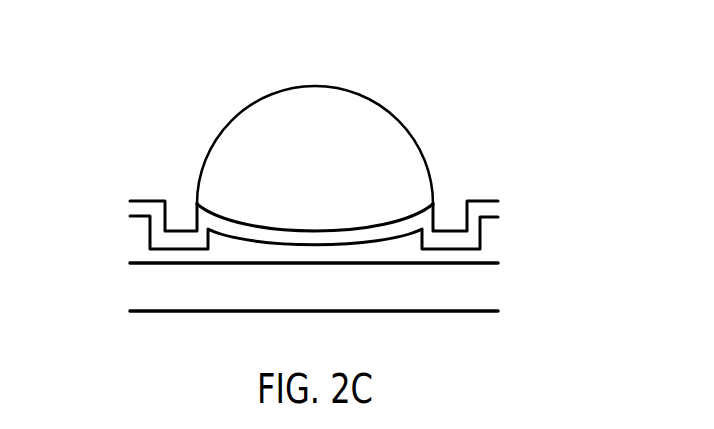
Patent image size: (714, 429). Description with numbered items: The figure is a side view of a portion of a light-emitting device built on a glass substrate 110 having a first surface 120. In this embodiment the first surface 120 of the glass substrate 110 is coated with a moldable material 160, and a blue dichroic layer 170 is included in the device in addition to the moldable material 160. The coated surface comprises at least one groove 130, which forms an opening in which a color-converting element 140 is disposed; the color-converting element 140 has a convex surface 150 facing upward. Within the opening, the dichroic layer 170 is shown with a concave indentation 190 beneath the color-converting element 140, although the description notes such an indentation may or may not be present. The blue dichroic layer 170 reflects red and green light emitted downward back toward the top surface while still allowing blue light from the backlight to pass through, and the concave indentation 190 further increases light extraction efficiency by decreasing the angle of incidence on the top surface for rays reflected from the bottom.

The glass substrate 110 is at (480, 290).
The first surface 120 is at (147, 266).
The groove 130 is at (176, 192).
The color-converting element 140 is at (335, 157).
The convex surface 150 is at (253, 97).
The moldable material 160 is at (140, 253).
The blue dichroic layer 170 is at (500, 210).
The concave indentation 190 is at (322, 229).